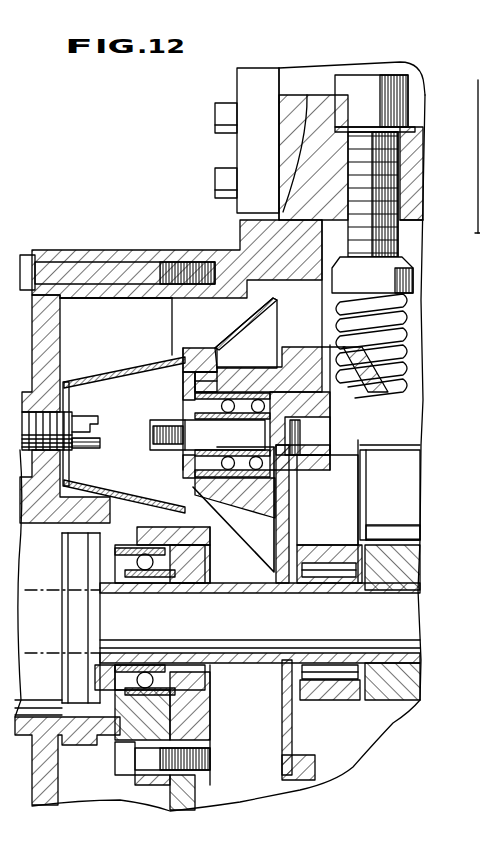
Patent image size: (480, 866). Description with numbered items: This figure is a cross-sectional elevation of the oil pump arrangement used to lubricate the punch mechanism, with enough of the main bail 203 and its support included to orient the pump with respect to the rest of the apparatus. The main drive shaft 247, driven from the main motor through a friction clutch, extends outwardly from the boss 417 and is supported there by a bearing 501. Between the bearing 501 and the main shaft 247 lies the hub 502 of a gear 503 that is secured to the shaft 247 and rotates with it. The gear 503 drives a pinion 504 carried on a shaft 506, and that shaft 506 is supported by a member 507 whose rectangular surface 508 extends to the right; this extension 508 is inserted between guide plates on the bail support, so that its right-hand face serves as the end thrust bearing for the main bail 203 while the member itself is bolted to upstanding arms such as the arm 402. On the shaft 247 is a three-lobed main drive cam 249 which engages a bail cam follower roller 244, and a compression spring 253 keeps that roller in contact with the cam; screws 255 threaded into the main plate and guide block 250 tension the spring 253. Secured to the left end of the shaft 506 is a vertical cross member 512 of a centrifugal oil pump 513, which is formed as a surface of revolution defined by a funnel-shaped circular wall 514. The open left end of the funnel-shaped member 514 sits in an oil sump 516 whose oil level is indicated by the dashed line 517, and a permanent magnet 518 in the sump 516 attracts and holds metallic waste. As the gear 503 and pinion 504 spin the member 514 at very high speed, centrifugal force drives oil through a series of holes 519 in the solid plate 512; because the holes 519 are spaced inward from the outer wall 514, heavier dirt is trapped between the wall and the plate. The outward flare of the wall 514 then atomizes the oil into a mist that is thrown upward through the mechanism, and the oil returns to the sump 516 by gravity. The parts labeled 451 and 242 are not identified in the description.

The main bail 203 is at (418, 410).
The guide block 250 is at (290, 100).
The screws 255 is at (374, 95).
The bracket 451 is at (478, 108).
The oil sump 516 is at (112, 349).
The dashed line 517 is at (165, 306).
The permanent magnet 518 is at (88, 425).
The vertical cross member 512 is at (185, 386).
The centrifugal oil pump 513 is at (198, 347).
The holes 519 is at (218, 376).
The member 507 is at (312, 330).
The funnel-shaped circular wall 514 is at (242, 352).
The shaft 506 is at (220, 447).
The pinion 504 is at (325, 405).
The gear 503 is at (290, 530).
The hub 502 is at (355, 592).
The bearing 501 is at (343, 576).
The cover block 242 is at (420, 462).
The cam follower roller 244 is at (410, 480).
The main drive cam 249 is at (400, 580).
The main drive shaft 247 is at (276, 633).
The boss 417 is at (340, 700).
The upstanding arm 402 is at (330, 300).
The compression spring 253 is at (405, 332).
The rectangular surface 508 is at (315, 362).